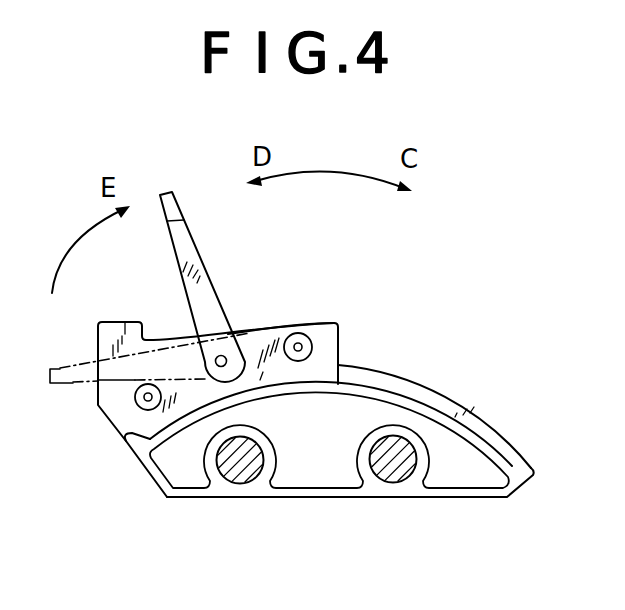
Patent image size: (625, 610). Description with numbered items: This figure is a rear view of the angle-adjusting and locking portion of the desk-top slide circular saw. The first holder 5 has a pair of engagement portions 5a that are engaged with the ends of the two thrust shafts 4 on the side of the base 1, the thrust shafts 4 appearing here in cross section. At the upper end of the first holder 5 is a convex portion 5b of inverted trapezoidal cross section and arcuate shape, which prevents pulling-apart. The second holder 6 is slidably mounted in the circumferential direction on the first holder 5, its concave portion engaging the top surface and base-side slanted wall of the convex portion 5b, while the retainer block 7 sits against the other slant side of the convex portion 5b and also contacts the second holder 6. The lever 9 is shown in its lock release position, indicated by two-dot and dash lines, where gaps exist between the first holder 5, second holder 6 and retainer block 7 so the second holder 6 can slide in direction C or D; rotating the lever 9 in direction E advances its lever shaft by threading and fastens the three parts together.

The base 1 is at (66, 384).
The thrust shafts 4 is at (232, 478).
The first holder 5 is at (497, 479).
The engagement portions 5a is at (267, 481).
The convex portion 5b is at (445, 402).
The second holder 6 is at (163, 341).
The retainer block 7 is at (327, 331).
The lever 9 is at (202, 283).